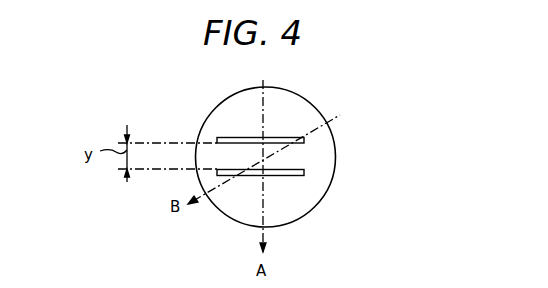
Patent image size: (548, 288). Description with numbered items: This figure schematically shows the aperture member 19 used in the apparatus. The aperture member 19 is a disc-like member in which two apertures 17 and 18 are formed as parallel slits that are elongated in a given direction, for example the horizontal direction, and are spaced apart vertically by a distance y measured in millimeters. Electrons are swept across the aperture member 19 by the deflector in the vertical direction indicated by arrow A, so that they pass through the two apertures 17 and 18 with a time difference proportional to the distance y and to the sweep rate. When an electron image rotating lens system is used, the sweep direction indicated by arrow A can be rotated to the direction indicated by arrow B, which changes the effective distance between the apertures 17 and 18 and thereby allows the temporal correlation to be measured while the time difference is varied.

The aperture 17 is at (286, 137).
The aperture 18 is at (285, 176).
The aperture member 19 is at (222, 99).